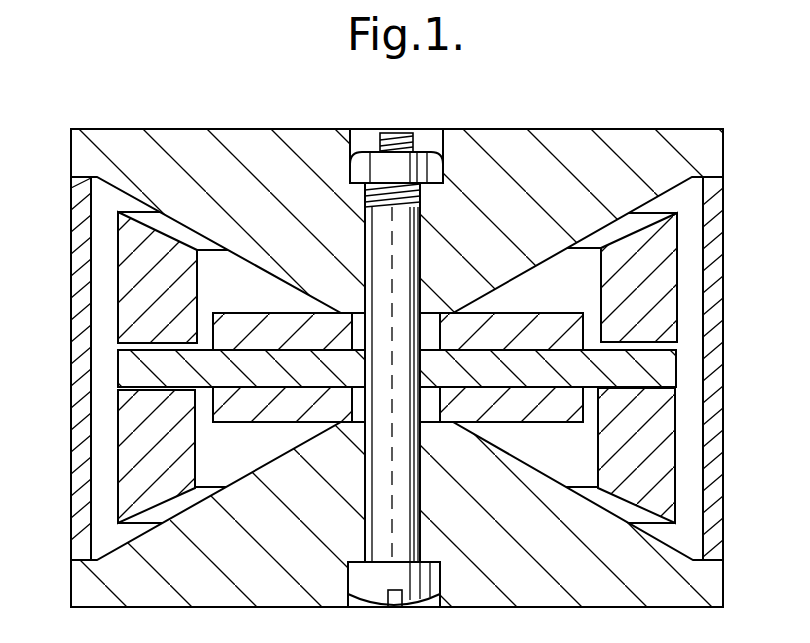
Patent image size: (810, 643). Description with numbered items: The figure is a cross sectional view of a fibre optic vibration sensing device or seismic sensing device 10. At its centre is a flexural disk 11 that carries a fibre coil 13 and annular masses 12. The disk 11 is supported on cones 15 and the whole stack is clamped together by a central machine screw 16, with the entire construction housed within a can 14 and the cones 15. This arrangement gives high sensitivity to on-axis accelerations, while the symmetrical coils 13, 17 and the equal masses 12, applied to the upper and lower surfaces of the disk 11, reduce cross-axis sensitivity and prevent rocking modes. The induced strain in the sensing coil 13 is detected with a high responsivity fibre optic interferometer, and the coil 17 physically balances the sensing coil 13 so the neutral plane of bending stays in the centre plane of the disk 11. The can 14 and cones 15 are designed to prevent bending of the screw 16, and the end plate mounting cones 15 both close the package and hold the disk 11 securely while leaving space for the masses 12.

The fibre optic vibration sensing device 10 is at (568, 105).
The flexural disk 11 is at (668, 363).
The annular masses 12 is at (168, 309).
The fibre coil 13 is at (275, 348).
The can 14 is at (71, 353).
The cones 15 is at (533, 200).
The machine screw 16 is at (402, 130).
The coil 17 is at (280, 421).